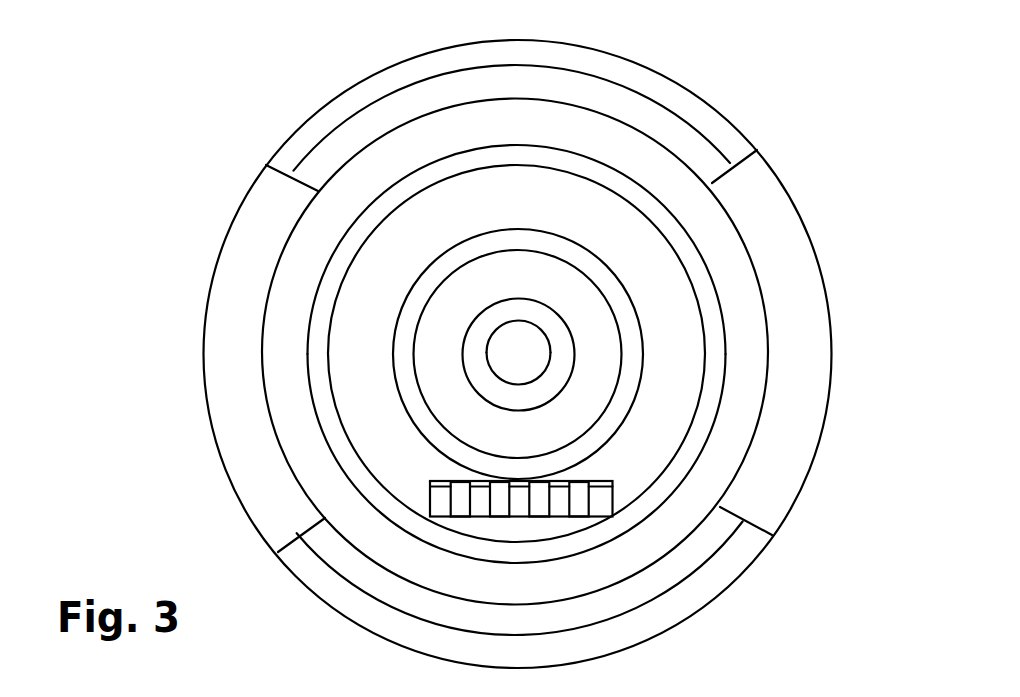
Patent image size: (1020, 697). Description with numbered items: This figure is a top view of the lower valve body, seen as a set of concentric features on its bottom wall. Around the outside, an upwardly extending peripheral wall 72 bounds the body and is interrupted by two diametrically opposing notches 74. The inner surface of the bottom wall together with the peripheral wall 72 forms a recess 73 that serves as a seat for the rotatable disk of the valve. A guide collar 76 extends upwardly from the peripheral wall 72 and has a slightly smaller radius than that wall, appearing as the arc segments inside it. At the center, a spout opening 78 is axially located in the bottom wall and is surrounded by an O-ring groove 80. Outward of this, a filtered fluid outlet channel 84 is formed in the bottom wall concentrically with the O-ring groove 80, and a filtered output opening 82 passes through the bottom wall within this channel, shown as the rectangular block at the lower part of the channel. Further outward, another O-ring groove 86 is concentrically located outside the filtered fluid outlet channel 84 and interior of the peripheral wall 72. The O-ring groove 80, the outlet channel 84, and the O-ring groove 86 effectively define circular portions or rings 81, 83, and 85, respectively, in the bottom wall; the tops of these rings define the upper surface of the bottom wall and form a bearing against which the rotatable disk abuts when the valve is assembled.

The peripheral wall 72 is at (722, 113).
The recess 73 is at (629, 143).
The notches 74 is at (237, 320).
The guide collar 76 is at (450, 92).
The spout opening 78 is at (519, 344).
The O-ring groove 80 is at (466, 255).
The ring 81 is at (518, 310).
The filtered output opening 82 is at (430, 505).
The ring 83 is at (462, 300).
The filtered fluid outlet channel 84 is at (675, 297).
The ring 85 is at (343, 257).
The O-ring groove 86 is at (313, 248).